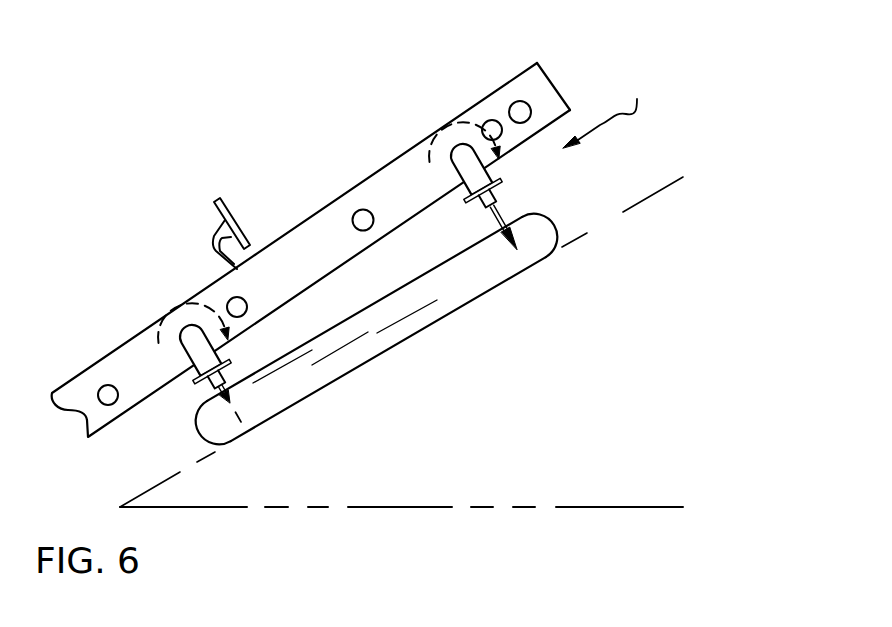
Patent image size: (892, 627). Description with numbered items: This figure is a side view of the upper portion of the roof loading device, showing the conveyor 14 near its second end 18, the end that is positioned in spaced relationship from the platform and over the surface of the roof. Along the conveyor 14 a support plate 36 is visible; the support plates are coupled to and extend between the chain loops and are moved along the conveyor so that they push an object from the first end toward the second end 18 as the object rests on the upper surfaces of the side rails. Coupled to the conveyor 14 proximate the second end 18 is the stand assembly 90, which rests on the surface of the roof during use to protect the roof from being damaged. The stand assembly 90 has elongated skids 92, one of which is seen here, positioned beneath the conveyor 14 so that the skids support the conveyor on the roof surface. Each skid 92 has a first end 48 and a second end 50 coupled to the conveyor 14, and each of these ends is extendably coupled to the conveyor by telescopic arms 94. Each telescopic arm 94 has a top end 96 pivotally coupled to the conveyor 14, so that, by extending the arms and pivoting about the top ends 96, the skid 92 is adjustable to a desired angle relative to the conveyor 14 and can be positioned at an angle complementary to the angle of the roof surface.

The conveyor 14 is at (322, 228).
The second end 18 is at (557, 86).
The support plate 36 is at (229, 213).
The first end 48 is at (203, 431).
The second end 50 is at (560, 222).
The stand assembly 90 is at (608, 110).
The skid 92 is at (443, 293).
The telescopic arm 94 is at (233, 356).
The top end 96 is at (184, 330).